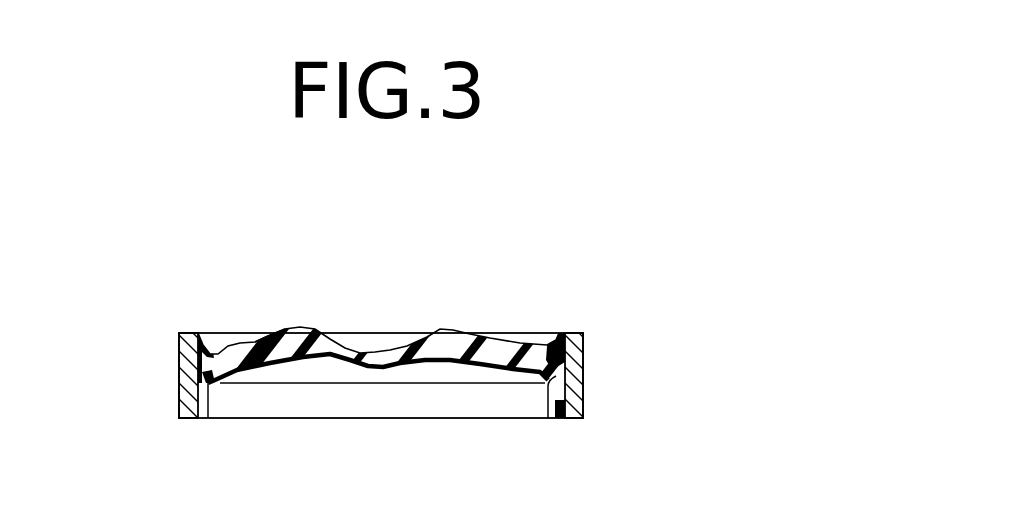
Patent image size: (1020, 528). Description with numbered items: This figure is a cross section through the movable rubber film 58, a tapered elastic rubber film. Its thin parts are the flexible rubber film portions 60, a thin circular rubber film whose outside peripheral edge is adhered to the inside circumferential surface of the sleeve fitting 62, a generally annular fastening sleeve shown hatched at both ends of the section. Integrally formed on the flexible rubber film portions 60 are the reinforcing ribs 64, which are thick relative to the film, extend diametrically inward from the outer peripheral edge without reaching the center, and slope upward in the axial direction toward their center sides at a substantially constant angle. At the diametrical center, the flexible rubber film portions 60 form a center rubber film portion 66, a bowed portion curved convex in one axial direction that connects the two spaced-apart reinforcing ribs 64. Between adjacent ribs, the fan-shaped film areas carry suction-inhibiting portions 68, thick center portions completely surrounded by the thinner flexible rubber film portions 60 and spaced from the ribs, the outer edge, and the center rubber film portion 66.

The movable rubber film 58 is at (580, 262).
The flexible rubber film portions 60 is at (317, 355).
The sleeve fitting 62 is at (188, 367).
The reinforcing ribs 64 is at (493, 352).
The center rubber film portion 66 is at (380, 350).
The suction-inhibiting portions 68 is at (252, 357).